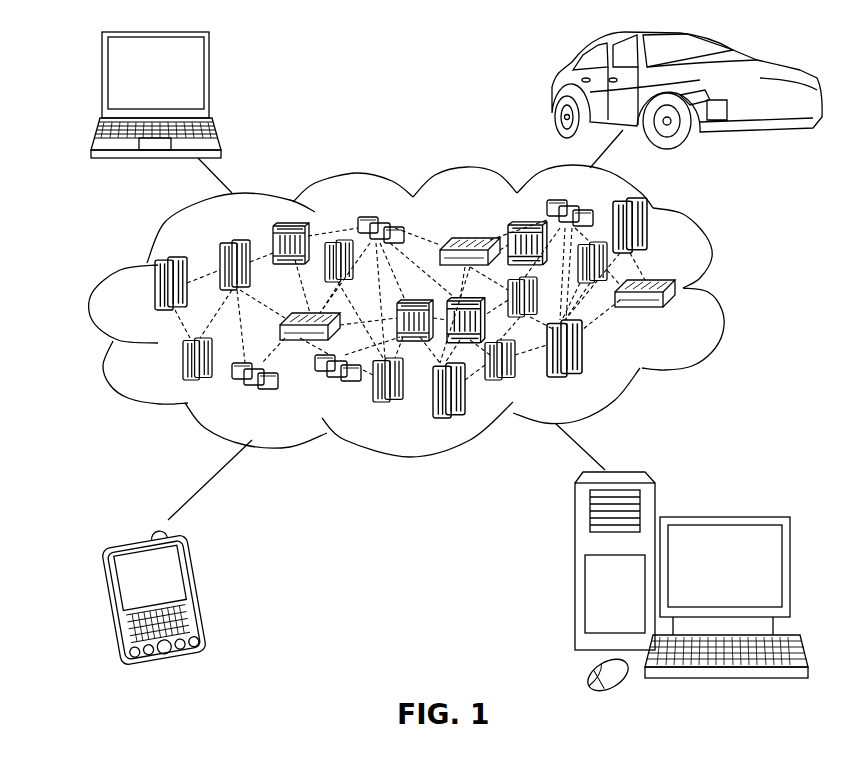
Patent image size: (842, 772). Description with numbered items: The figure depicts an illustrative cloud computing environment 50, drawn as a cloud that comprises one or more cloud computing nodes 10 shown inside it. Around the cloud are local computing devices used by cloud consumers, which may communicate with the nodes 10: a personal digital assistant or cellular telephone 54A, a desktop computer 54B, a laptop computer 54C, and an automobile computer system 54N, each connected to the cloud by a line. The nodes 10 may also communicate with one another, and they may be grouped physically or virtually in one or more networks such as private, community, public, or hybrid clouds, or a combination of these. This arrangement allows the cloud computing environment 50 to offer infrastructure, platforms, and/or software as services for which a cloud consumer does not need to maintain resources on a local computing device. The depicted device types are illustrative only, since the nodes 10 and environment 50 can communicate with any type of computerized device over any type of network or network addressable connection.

The cloud computing node 10 is at (680, 315).
The cloud computing environment 50 is at (428, 311).
The personal digital assistant or cellular telephone 54A is at (202, 590).
The desktop computer 54B is at (722, 515).
The laptop computer 54C is at (209, 80).
The automobile computer system 54N is at (552, 92).